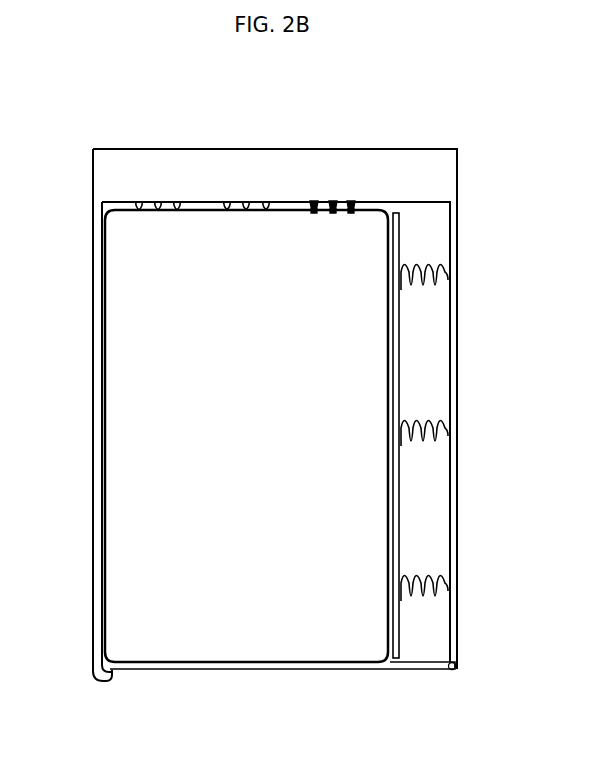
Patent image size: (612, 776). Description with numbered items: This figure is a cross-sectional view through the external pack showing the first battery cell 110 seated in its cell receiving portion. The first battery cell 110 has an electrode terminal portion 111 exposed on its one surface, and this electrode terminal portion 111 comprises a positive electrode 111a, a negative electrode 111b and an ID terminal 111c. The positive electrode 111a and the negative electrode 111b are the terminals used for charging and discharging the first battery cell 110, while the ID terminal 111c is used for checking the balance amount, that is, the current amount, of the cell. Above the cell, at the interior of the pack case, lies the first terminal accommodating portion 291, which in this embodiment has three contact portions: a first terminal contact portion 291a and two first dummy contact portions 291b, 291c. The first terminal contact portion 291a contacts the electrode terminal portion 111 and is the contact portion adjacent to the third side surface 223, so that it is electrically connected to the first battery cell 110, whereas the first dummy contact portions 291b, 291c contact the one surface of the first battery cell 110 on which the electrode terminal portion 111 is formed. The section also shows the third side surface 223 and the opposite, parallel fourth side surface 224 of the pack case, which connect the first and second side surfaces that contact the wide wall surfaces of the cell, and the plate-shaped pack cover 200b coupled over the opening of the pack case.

The first battery cell 110 is at (263, 437).
The electrode terminal portion 111 is at (267, 297).
The positive electrode 111a is at (351, 213).
The negative electrode 111b is at (314, 213).
The ID terminal 111c is at (333, 213).
The pack cover 200b is at (414, 671).
The third side surface 223 is at (457, 509).
The fourth side surface 224 is at (97, 435).
The first terminal accommodating portion 291 is at (350, 97).
The first terminal contact portion 291a is at (314, 201).
The first dummy contact portion 291b is at (266, 202).
The first dummy contact portion 291c is at (139, 202).